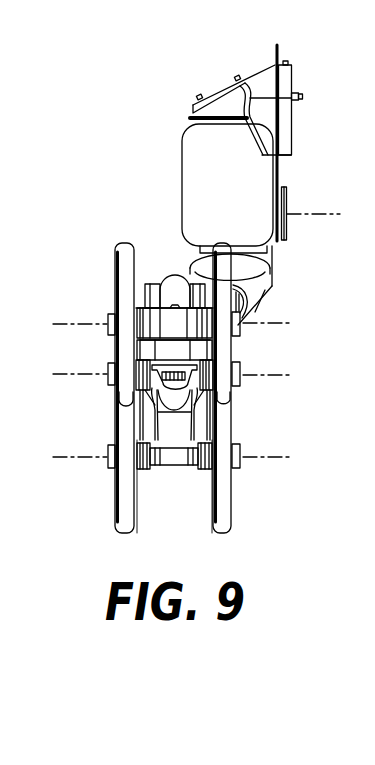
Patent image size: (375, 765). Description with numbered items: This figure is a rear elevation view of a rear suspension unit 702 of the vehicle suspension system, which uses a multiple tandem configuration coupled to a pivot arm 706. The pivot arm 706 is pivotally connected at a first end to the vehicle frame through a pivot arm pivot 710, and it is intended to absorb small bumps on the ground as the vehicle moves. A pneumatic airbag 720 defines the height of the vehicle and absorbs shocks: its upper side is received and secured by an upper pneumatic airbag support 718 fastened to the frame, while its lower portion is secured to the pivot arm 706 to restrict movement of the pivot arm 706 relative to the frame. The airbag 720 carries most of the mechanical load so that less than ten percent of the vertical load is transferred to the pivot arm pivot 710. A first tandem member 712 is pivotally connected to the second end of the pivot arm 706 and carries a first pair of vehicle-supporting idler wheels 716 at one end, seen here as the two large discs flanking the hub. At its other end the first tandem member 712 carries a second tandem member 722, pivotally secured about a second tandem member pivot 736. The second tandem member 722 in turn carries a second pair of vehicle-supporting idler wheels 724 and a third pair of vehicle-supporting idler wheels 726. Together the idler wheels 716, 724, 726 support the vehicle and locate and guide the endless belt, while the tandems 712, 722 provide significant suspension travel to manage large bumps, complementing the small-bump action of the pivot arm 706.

The suspension unit 702 is at (314, 66).
The upper pneumatic airbag support 718 is at (225, 102).
The pneumatic airbag 720 is at (243, 200).
The pivot arm pivot 710 is at (286, 207).
The pivot arm 706 is at (263, 292).
The first pair of vehicle-supporting idler wheels 716 is at (103, 277).
The third pair of vehicle-supporting idler wheels 726 is at (243, 372).
The second pair of vehicle-supporting idler wheels 724 is at (242, 468).
The first tandem member 712 is at (175, 288).
The second tandem member pivot 736 is at (141, 404).
The second tandem member 722 is at (177, 444).